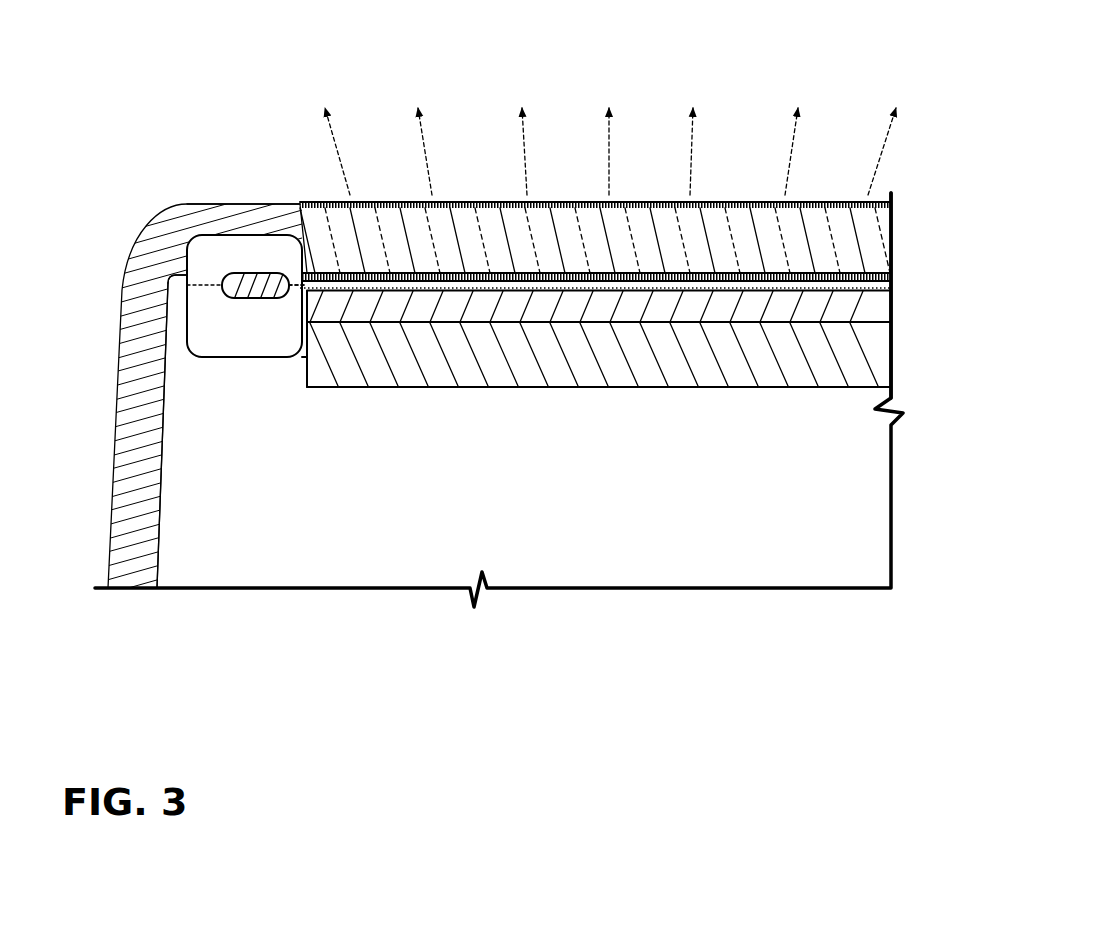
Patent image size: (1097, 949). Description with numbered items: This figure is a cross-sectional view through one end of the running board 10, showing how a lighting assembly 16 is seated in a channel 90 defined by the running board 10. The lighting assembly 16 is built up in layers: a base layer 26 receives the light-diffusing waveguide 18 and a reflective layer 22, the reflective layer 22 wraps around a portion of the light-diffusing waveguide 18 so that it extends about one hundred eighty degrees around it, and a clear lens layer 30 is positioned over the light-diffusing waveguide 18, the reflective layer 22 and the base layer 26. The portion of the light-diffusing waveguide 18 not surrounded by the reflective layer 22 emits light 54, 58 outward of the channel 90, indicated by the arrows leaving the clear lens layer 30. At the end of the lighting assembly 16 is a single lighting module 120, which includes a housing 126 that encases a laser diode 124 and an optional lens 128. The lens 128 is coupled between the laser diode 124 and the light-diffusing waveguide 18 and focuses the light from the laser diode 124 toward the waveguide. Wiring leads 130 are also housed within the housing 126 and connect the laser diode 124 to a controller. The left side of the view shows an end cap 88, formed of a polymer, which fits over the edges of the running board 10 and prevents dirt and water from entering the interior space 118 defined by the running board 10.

The running board 10 is at (230, 92).
The lighting assembly 16 is at (298, 145).
The light-diffusing waveguide 18 is at (875, 288).
The reflective layer 22 is at (855, 303).
The base layer 26 is at (848, 360).
The clear lens layer 30 is at (845, 228).
The light 54 is at (616, 106).
The light 58 is at (925, 80).
The end cap 88 is at (133, 345).
The channel 90 is at (895, 252).
The interior space 118 is at (228, 453).
The lighting module 120 is at (222, 253).
The laser diode 124 is at (266, 272).
The housing 126 is at (172, 293).
The lens 128 is at (292, 292).
The wiring leads 130 is at (210, 286).